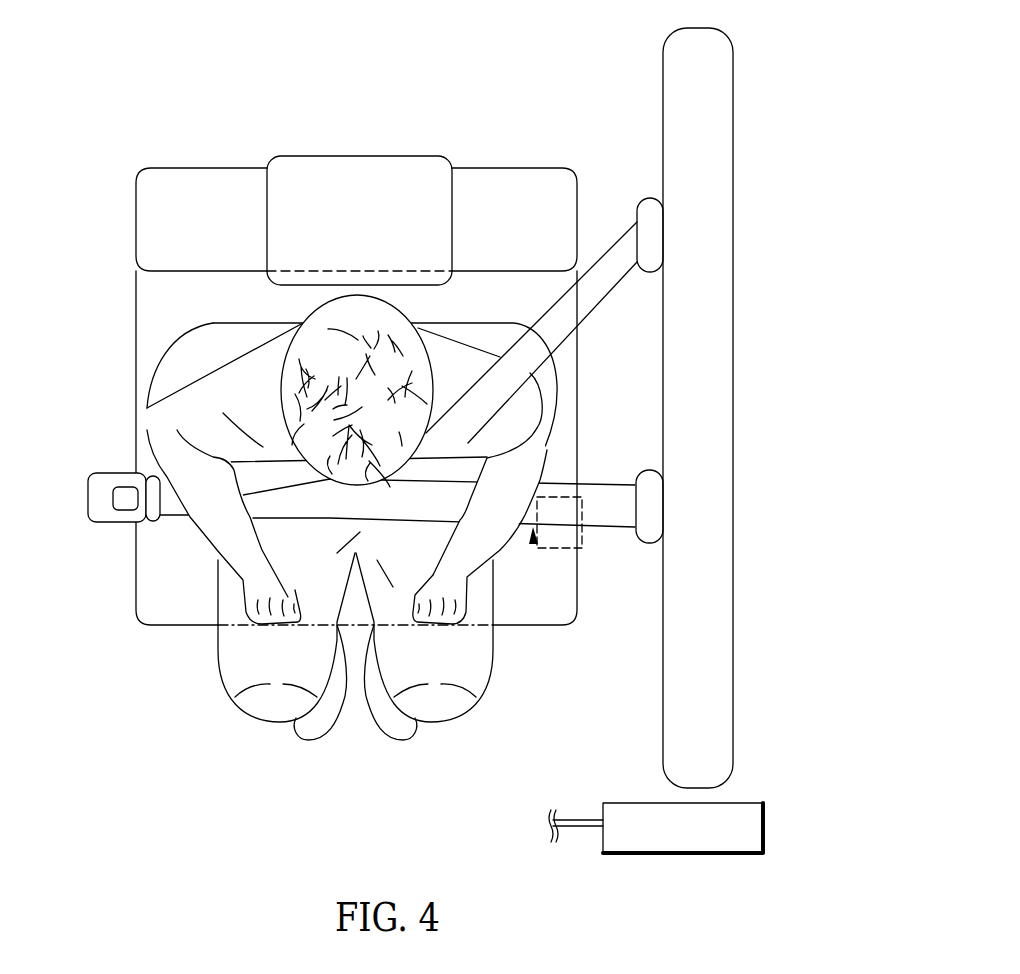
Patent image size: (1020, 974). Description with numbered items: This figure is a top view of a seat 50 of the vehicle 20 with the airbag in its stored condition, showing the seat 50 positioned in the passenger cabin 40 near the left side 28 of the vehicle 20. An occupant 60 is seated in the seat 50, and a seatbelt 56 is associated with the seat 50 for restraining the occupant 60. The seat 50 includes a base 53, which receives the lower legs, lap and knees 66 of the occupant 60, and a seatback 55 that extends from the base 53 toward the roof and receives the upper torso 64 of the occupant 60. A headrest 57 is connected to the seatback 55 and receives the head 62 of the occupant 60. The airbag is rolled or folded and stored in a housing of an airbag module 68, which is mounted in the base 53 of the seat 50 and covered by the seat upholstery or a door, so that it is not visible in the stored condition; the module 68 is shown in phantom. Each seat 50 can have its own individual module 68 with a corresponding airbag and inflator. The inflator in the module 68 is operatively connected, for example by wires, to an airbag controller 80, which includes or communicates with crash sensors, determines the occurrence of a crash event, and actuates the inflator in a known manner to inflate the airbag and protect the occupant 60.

The vehicle 20 is at (114, 125).
The left side 28 is at (748, 548).
The passenger compartment 40 is at (367, 769).
The seat 50 is at (135, 567).
The base 53 is at (565, 578).
The seatback 55 is at (513, 190).
The seatbelt 56 is at (547, 330).
The headrest 57 is at (367, 185).
The occupant 60 is at (140, 434).
The head 62 is at (290, 380).
The upper torso 64 is at (165, 410).
The lower legs/lap/knees 66 is at (262, 705).
The airbag module 68 is at (535, 549).
The airbag controller 80 is at (692, 853).